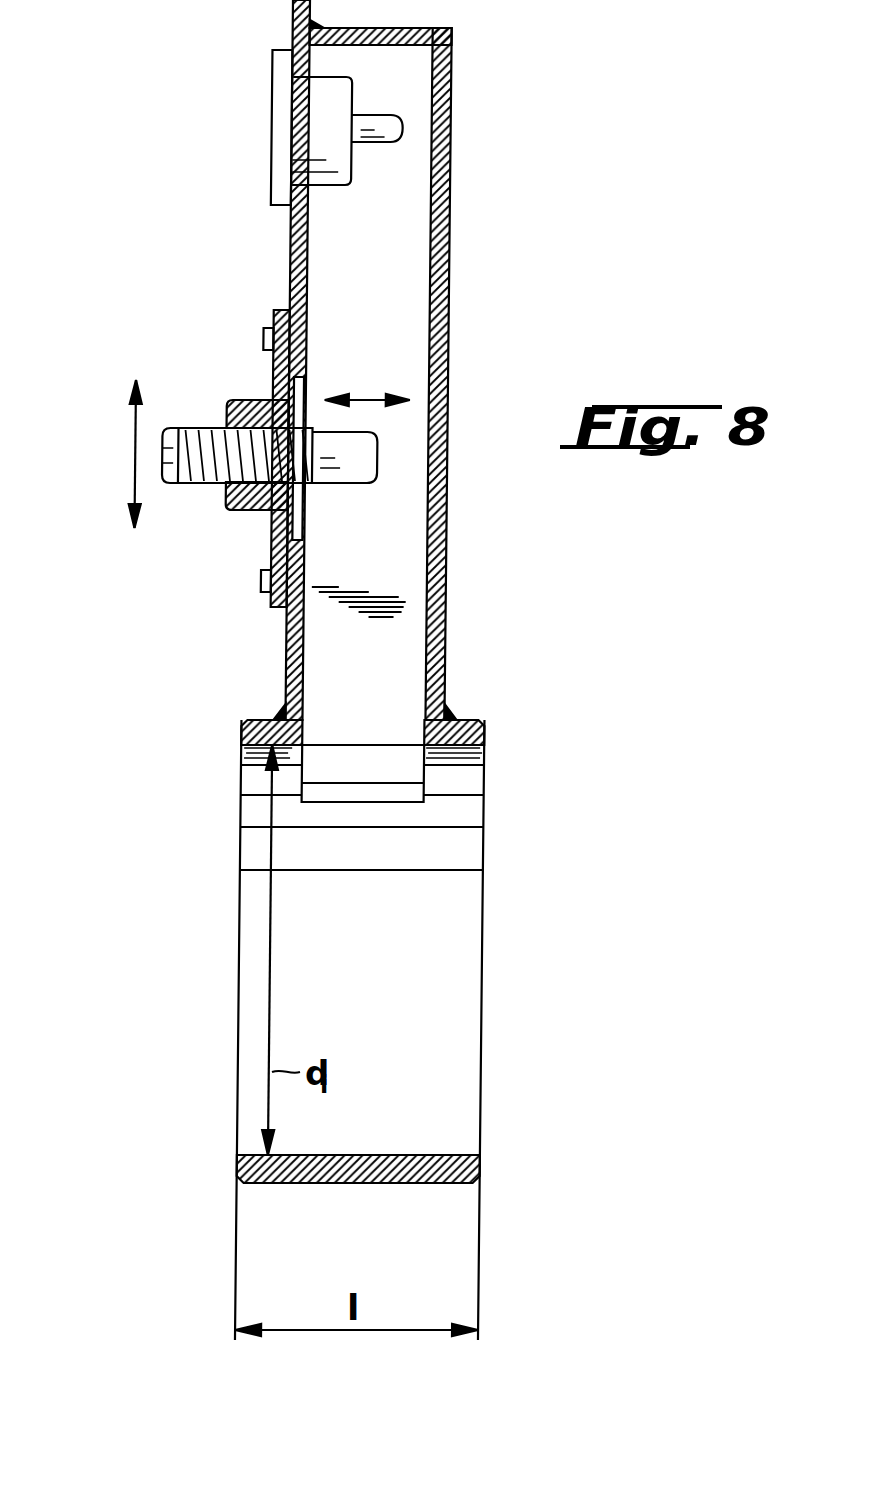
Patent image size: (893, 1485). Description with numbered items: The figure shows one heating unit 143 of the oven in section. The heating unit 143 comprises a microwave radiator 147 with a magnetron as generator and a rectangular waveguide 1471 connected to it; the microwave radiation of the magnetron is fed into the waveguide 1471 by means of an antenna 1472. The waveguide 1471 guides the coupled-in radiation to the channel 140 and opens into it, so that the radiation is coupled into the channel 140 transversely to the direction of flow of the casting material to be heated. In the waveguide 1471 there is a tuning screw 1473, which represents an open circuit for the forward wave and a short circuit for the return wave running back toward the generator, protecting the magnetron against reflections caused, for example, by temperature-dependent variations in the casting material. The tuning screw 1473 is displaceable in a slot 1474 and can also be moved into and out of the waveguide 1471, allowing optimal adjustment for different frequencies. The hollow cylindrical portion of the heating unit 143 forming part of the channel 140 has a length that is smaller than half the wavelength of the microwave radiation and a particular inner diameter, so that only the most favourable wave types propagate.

The channel 140 is at (166, 1123).
The heating unit 143 is at (411, 401).
The microwave radiator 147 is at (320, 125).
The waveguide 1471 is at (403, 318).
The antenna 1472 is at (405, 128).
The tuning screw 1473 is at (207, 437).
The slot 1474 is at (297, 528).